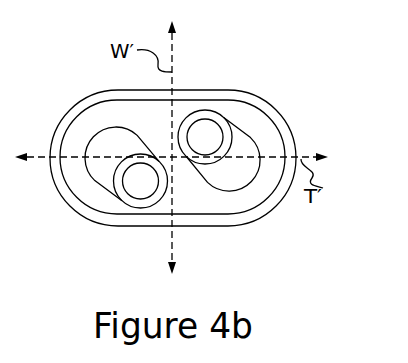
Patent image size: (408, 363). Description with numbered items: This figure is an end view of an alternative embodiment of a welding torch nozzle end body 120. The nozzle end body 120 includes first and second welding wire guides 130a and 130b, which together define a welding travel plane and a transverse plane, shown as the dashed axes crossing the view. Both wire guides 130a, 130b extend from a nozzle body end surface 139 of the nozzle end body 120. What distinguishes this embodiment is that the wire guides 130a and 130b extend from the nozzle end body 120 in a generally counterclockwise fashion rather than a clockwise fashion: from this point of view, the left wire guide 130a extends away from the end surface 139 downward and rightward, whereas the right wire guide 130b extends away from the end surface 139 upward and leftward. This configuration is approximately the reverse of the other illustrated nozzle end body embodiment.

The nozzle end body 120 is at (292, 134).
The first welding wire guide 130a is at (103, 169).
The second welding wire guide 130b is at (243, 143).
The nozzle body end surface 139 is at (163, 128).